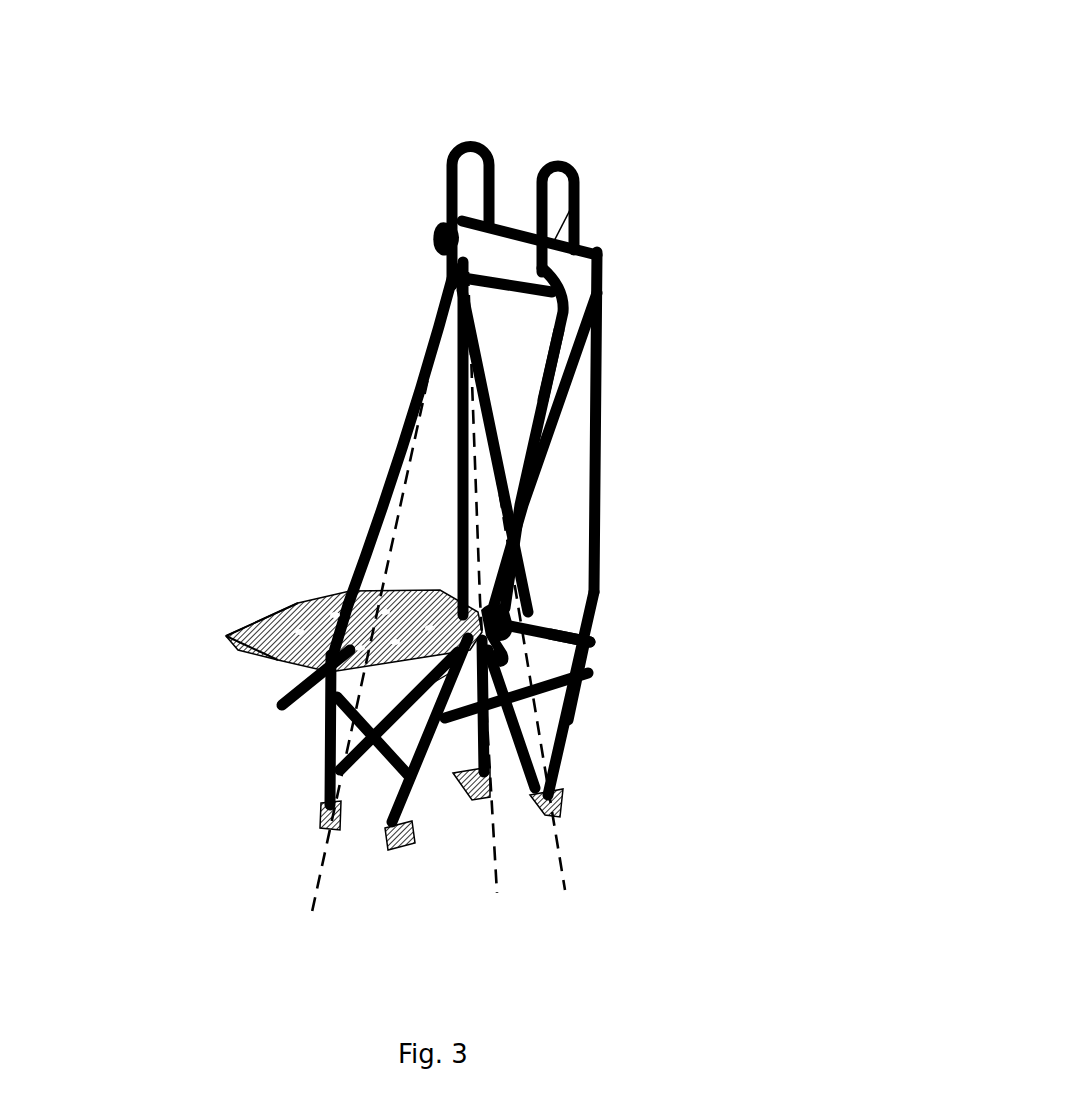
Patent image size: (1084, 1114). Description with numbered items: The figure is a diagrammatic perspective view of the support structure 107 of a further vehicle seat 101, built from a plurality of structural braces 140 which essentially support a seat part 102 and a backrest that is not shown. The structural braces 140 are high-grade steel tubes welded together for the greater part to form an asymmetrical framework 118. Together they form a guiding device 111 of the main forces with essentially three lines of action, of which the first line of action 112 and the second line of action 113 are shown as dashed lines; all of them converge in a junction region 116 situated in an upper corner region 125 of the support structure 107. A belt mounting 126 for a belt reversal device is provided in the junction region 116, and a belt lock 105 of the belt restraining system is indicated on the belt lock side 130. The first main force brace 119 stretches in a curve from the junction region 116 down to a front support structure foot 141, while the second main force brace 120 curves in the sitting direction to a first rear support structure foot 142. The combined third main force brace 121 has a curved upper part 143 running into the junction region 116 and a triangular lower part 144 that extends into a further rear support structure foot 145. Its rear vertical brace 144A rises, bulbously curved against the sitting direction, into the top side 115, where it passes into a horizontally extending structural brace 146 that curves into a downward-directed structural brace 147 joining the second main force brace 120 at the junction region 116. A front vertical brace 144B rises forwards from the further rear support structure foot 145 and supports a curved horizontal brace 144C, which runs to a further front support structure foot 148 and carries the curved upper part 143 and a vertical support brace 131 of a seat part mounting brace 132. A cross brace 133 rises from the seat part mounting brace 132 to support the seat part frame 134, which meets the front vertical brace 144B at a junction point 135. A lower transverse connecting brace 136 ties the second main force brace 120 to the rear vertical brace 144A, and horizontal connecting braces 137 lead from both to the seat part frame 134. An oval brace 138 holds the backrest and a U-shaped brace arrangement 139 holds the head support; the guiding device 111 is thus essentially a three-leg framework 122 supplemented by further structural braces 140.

The vehicle seat 101 is at (292, 248).
The seat part 102 is at (292, 603).
The belt lock 105 is at (520, 630).
The support structure 107 is at (722, 148).
The guiding device of the main forces 111 is at (417, 130).
The first line of action of the main forces 112 is at (313, 890).
The second line of action of the main forces 113 is at (500, 885).
The top side of the support structure 115 is at (758, 255).
The junction region 116 is at (418, 268).
The asymmetrical framework 118 is at (608, 327).
The first main force brace 119 is at (367, 537).
The second main force brace 120 is at (457, 482).
The third main force brace 121 is at (660, 795).
The three-leg framework 122 is at (332, 460).
The upper corner region 125 is at (507, 253).
The belt mounting 126 is at (440, 237).
The belt lock side 130 is at (598, 135).
The vertical support brace 131 is at (313, 780).
The seat part mounting brace 132 is at (535, 475).
The cross brace 133 is at (322, 738).
The seat part frame 134 is at (445, 685).
The junction point 135 is at (227, 637).
The lower transverse connecting brace 136 is at (547, 612).
The horizontal connecting braces 137 is at (553, 653).
The oval brace 138 is at (552, 365).
The U-shaped brace arrangement 139 is at (617, 213).
The structural braces 140 is at (748, 535).
The front support structure foot 141 is at (298, 820).
The first rear support structure foot 142 is at (467, 808).
The curved upper part 143 is at (483, 413).
The triangular lower part 144 is at (700, 742).
The rear vertical brace 144A is at (580, 727).
The front vertical brace 144B is at (520, 787).
The horizontal brace 144C is at (500, 700).
The further rear support structure foot 145 is at (573, 818).
The horizontally extending structural brace 146 is at (583, 190).
The downward-directed structural brace 147 is at (495, 225).
The further front support structure foot 148 is at (392, 845).